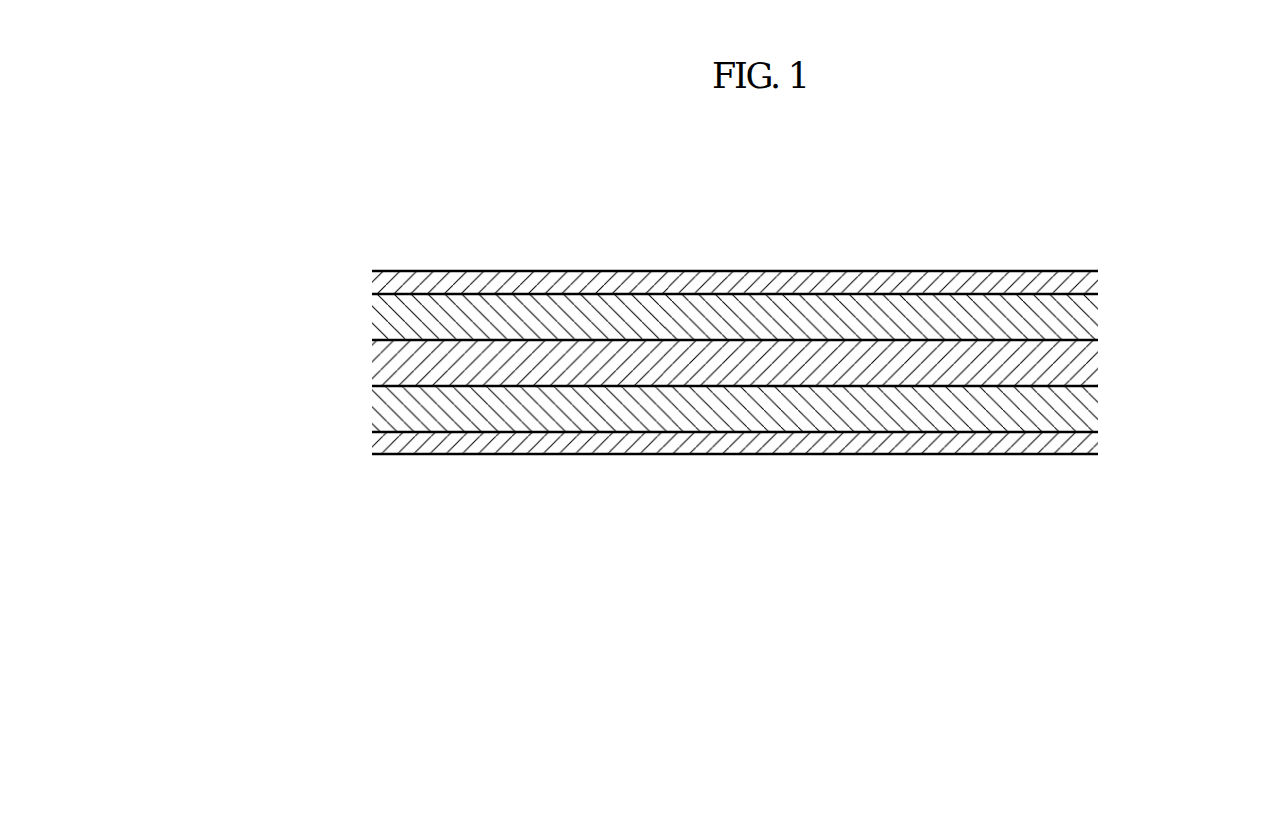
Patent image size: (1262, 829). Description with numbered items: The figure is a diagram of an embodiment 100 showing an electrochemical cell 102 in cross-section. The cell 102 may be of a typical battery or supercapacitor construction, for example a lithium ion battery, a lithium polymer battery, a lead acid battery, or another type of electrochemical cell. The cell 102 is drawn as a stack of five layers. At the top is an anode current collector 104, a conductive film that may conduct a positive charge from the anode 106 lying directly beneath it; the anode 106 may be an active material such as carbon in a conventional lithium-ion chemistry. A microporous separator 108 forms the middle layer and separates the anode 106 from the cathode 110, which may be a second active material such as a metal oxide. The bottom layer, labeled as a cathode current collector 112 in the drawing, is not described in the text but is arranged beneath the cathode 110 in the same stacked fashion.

The embodiment 100 is at (701, 426).
The electrochemical cell 102 is at (696, 380).
The anode current collector 104 is at (385, 281).
The anode 106 is at (1086, 318).
The microporous separator 108 is at (383, 358).
The cathode 110 is at (1086, 410).
The cathode current collector 112 is at (383, 441).